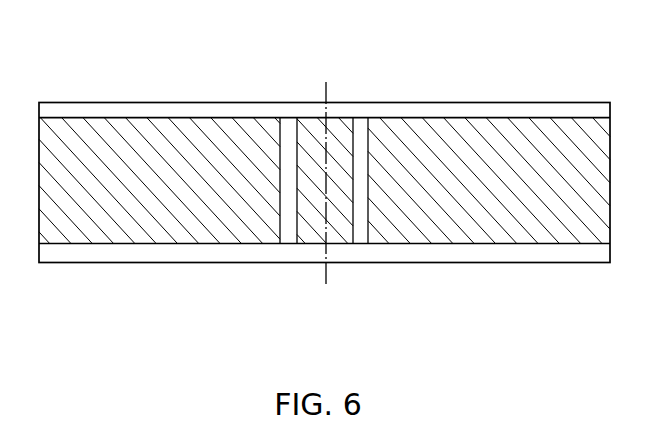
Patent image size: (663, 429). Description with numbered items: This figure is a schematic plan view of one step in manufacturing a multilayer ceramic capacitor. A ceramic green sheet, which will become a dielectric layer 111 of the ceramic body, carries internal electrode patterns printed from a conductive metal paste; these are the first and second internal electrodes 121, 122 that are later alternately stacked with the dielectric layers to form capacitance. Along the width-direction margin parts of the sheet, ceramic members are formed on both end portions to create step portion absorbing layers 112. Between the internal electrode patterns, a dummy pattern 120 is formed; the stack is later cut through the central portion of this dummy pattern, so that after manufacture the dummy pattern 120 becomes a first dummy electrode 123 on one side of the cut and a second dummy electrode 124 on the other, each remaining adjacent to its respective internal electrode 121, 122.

The dielectric layer 111 is at (498, 80).
The step portion absorbing layer 112 is at (163, 105).
The dummy pattern 120 is at (354, 311).
The first internal electrode 121 is at (150, 217).
The second internal electrode 122 is at (497, 215).
The first dummy electrode 123 is at (308, 227).
The second dummy electrode 124 is at (342, 227).